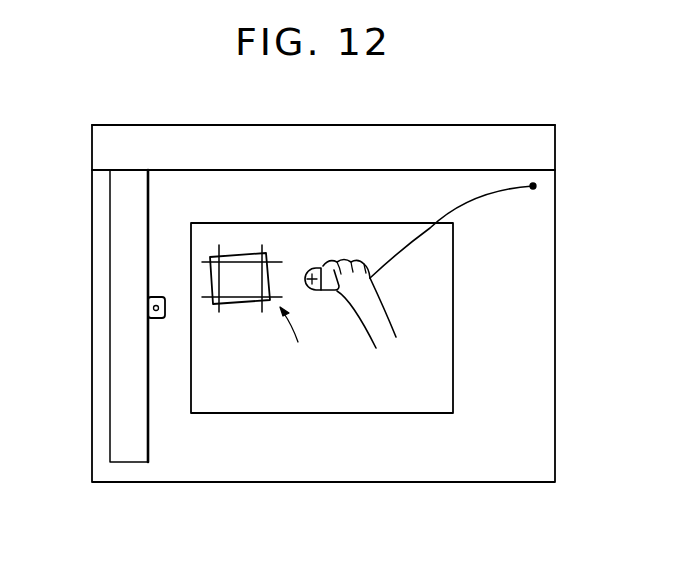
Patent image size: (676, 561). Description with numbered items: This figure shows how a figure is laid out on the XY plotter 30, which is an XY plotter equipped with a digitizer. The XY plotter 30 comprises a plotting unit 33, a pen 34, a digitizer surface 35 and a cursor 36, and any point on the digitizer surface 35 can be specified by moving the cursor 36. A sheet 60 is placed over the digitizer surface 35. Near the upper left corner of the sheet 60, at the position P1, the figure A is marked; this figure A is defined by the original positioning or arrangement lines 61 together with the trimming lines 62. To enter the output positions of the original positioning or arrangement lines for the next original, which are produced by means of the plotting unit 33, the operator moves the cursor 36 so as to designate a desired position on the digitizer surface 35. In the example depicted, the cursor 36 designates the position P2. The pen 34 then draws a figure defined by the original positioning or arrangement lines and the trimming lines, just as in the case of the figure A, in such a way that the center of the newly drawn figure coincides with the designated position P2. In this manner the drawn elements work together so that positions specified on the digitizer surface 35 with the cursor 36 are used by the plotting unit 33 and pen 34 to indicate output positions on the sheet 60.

The XY plotter 30 is at (397, 122).
The plotting unit 33 is at (117, 248).
The pen 34 is at (147, 308).
The digitizer surface 35 is at (535, 437).
The cursor 36 is at (323, 270).
The sheet 60 is at (352, 402).
The original positioning or arrangement lines 61 is at (240, 305).
The trimming lines 62 is at (218, 280).
The position P1 is at (239, 275).
The position P2 is at (307, 268).
The figure A is at (297, 336).